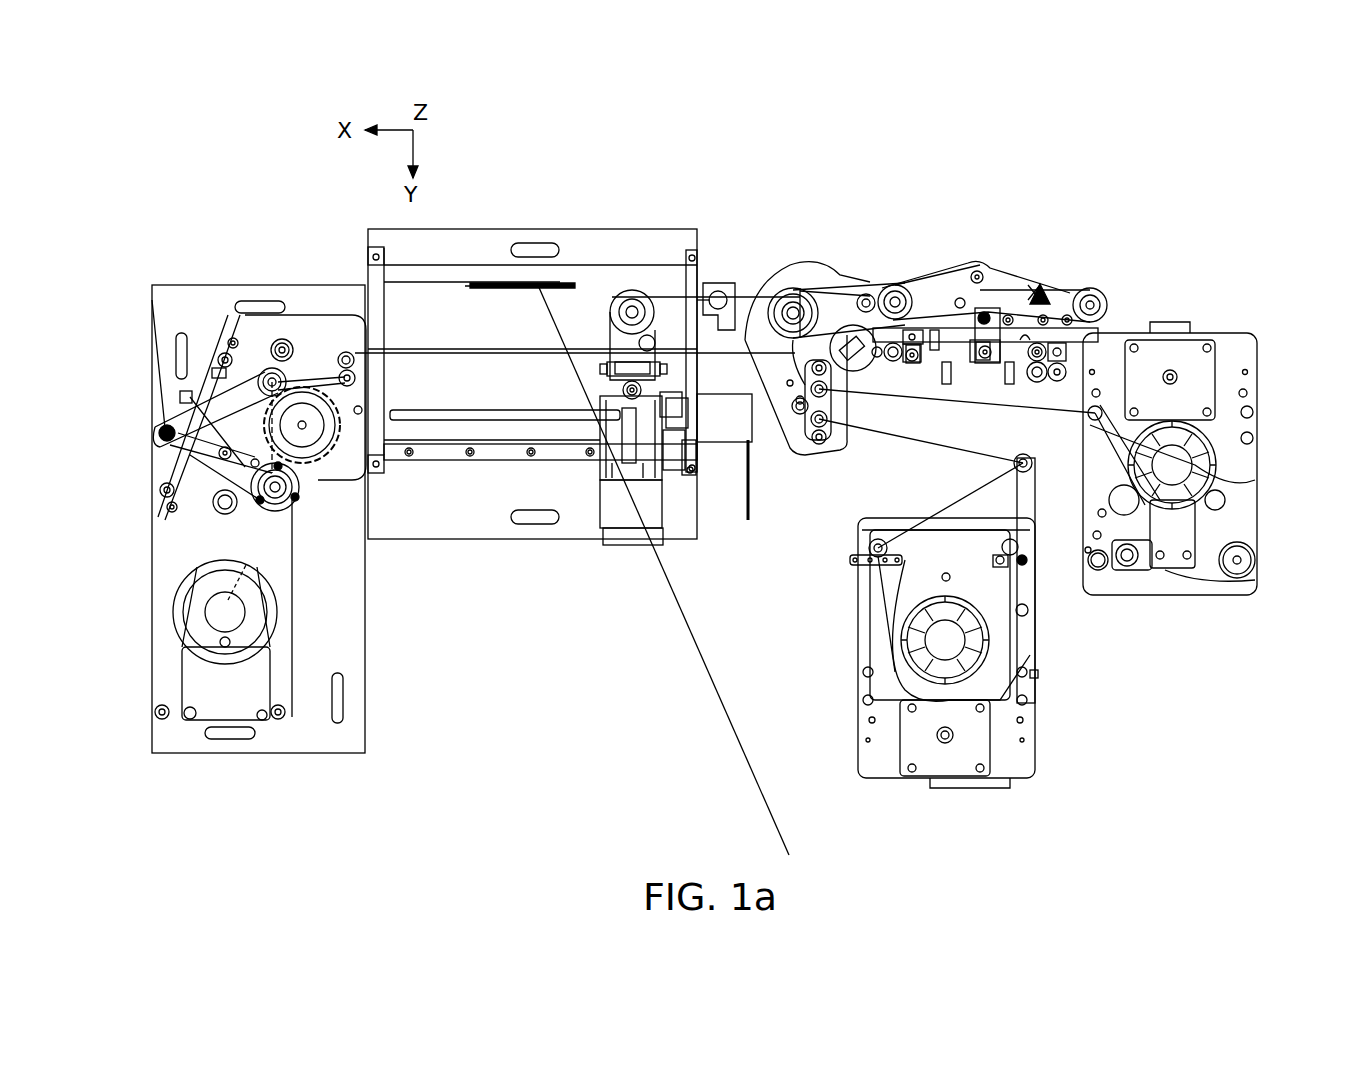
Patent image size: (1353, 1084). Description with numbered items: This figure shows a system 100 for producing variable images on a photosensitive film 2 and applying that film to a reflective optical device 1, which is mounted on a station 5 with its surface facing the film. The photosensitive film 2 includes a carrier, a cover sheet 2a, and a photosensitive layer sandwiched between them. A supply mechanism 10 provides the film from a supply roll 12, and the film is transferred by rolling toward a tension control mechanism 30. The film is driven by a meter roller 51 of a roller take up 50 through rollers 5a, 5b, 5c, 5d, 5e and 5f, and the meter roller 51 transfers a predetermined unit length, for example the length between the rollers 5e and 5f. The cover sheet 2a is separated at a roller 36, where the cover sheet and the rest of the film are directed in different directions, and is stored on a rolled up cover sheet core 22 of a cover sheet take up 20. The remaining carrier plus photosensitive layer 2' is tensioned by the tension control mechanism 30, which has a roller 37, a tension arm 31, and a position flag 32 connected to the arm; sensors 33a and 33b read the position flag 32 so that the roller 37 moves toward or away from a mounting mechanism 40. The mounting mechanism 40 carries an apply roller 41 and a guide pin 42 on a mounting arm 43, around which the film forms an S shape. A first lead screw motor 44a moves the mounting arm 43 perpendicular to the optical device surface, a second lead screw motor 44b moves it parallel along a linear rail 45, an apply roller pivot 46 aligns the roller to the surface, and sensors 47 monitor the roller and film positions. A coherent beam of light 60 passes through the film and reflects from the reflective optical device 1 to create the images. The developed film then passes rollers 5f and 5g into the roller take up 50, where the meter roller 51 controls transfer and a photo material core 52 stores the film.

The system 100 is at (1062, 163).
The reflective optical device 1 is at (533, 285).
The photosensitive film 2 is at (1018, 545).
The carrier plus photosensitive layer 2' is at (713, 252).
The cover sheet 2a is at (905, 405).
The station 5 is at (505, 283).
The roller 5a is at (888, 548).
The roller 5b is at (1033, 465).
The roller 5c is at (825, 430).
The roller 5d is at (828, 387).
The roller 5e is at (720, 290).
The roller 5f is at (345, 340).
The roller 5g is at (329, 359).
The supply mechanism 10 is at (1010, 785).
The supply roll 12 is at (990, 662).
The cover sheet take up 20 is at (1262, 460).
The rolled up cover sheet core 22 is at (1250, 555).
The tension control mechanism 30 is at (900, 270).
The tension arm 31 is at (1005, 275).
The position flag 32 is at (1000, 300).
The sensor 33a is at (912, 365).
The sensor 33b is at (985, 365).
The roller 36 is at (793, 305).
The roller 37 is at (866, 294).
The mounting mechanism 40 is at (483, 541).
The apply roller 41 is at (645, 300).
The guide pin 42 is at (692, 265).
The mounting arm 43 is at (660, 355).
The first lead screw motor 44a is at (620, 522).
The second lead screw motor 44b is at (752, 428).
The linear rail 45 is at (433, 462).
The apply roller pivot 46 is at (660, 376).
The sensor 47 is at (685, 418).
The roller take up 50 is at (150, 345).
The meter roller 51 is at (315, 462).
The photo material core 52 is at (195, 640).
The beam of light 60 is at (735, 700).